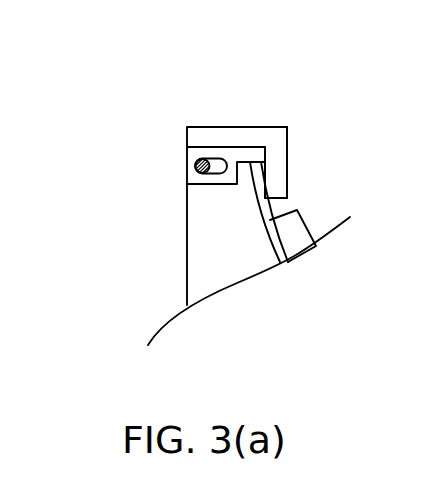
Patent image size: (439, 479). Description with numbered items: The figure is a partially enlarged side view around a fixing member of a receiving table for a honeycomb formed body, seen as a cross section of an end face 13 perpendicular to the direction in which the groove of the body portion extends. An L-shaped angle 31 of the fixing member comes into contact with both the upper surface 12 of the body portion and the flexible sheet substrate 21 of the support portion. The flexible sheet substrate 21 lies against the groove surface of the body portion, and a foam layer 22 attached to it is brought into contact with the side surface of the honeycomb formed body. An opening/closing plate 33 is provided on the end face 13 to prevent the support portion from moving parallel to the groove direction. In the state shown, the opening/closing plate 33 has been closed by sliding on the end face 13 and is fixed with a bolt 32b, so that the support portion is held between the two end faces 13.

The upper surface 12 is at (228, 146).
The end face 13 is at (225, 270).
The flexible sheet substrate 21 is at (265, 220).
The foam layer 22 is at (297, 230).
The L-shaped angle 31 is at (275, 162).
The bolt 32b is at (195, 161).
The opening/closing plate 33 is at (203, 177).